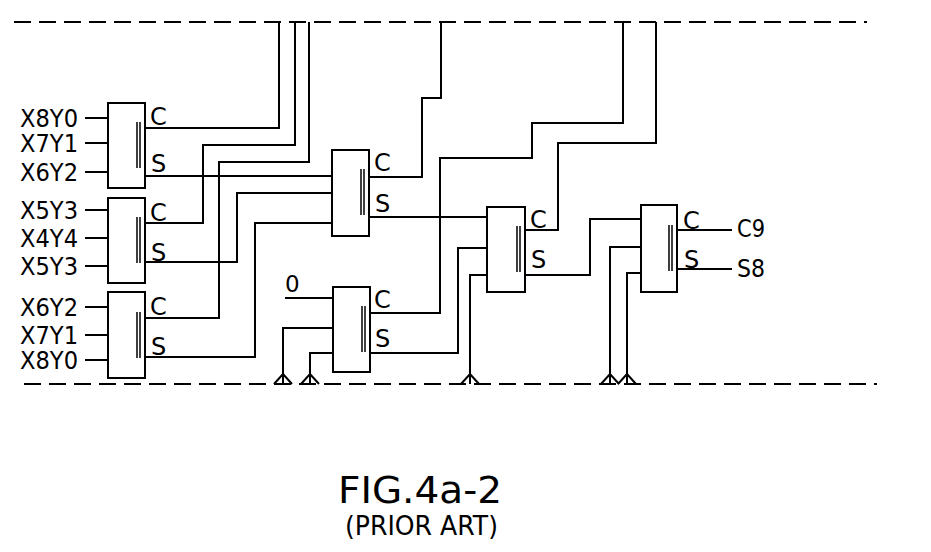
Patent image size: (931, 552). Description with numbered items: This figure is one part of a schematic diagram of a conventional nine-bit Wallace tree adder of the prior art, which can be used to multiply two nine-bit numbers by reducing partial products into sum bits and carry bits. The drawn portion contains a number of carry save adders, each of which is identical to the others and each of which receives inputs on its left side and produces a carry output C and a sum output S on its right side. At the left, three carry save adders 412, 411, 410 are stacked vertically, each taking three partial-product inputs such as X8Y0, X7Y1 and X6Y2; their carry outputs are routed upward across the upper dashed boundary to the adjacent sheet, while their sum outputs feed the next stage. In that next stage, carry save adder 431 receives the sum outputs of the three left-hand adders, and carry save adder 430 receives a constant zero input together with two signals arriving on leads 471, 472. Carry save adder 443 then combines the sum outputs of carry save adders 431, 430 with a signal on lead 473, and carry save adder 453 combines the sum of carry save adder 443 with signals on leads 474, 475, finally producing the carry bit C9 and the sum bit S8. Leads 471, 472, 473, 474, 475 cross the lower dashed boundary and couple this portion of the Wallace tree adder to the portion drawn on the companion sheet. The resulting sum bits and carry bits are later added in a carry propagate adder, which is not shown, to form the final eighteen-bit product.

The carry save adder 410 is at (220, 200).
The carry save adder 411 is at (220, 152).
The carry save adder 412 is at (220, 105).
The carry save adder 430 is at (478, 197).
The carry save adder 431 is at (409, 129).
The carry save adder 443 is at (571, 157).
The carry save adder 453 is at (659, 248).
The lead 471 is at (283, 372).
The lead 472 is at (317, 378).
The lead 473 is at (470, 351).
The lead 474 is at (610, 320).
The lead 475 is at (627, 350).